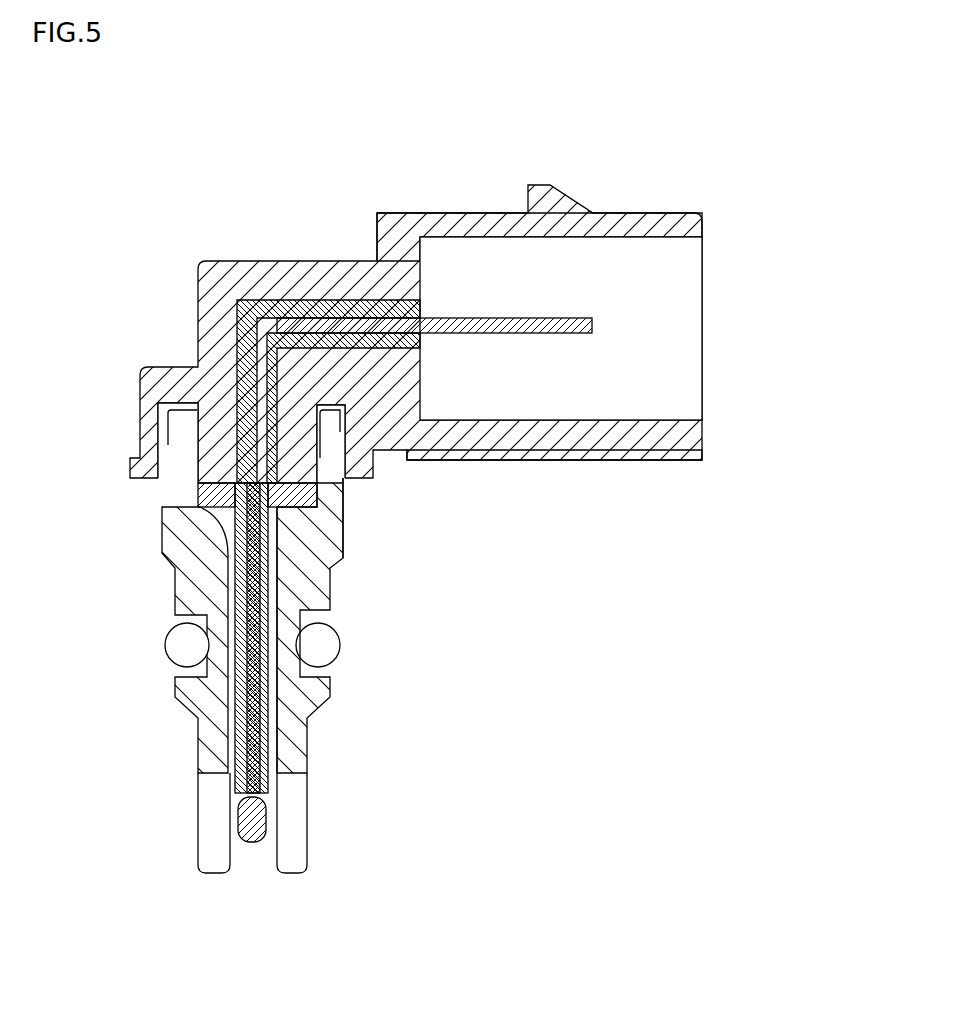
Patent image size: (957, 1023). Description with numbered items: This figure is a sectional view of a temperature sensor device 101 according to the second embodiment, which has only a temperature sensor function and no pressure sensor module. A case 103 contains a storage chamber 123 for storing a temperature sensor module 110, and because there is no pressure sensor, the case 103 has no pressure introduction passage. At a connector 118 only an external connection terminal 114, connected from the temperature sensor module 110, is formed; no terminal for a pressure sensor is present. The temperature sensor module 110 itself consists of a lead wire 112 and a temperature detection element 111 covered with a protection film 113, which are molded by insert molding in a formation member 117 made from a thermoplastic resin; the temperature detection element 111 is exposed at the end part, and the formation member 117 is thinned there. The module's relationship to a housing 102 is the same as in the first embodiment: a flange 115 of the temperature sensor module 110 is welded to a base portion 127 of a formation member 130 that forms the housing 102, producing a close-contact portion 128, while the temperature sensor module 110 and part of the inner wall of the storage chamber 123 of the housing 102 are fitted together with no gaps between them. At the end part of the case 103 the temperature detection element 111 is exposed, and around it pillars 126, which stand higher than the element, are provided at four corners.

The temperature sensor device 101 is at (637, 91).
The housing 102 is at (265, 261).
The case 103 is at (172, 556).
The temperature sensor module 110 is at (240, 350).
The temperature detection element 111 is at (260, 842).
The lead wire 112 is at (262, 427).
The protection film 113 is at (275, 745).
The external connection terminal 114 is at (308, 317).
The flange 115 is at (288, 520).
The formation member 117 is at (232, 738).
The connector 118 is at (643, 253).
The storage chamber 123 is at (310, 540).
The pillars 126 is at (308, 780).
The base portion 127 is at (470, 437).
The close-contact portion 128 is at (235, 485).
The formation member 130 is at (620, 447).